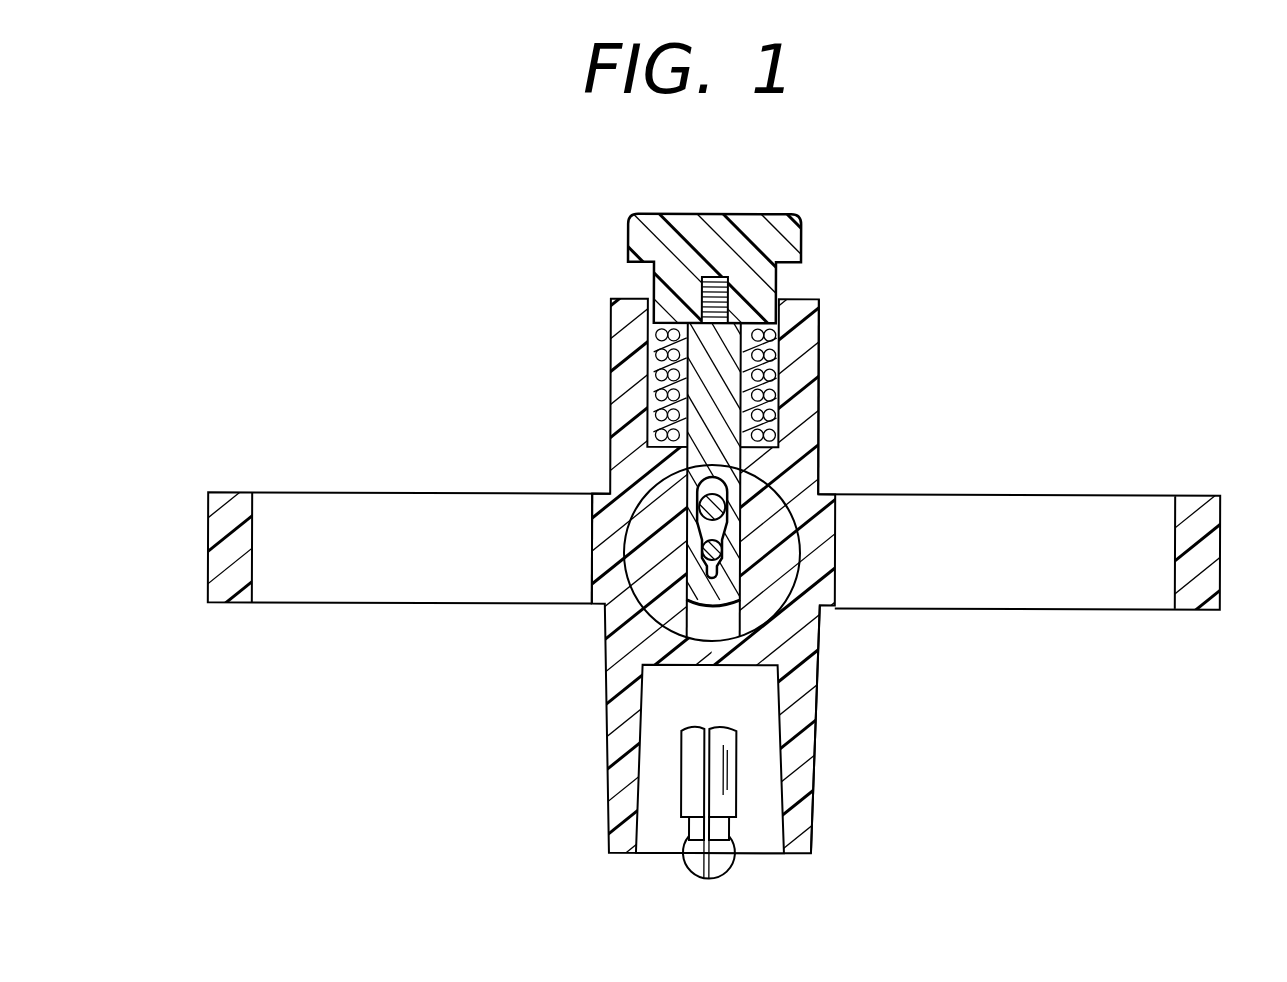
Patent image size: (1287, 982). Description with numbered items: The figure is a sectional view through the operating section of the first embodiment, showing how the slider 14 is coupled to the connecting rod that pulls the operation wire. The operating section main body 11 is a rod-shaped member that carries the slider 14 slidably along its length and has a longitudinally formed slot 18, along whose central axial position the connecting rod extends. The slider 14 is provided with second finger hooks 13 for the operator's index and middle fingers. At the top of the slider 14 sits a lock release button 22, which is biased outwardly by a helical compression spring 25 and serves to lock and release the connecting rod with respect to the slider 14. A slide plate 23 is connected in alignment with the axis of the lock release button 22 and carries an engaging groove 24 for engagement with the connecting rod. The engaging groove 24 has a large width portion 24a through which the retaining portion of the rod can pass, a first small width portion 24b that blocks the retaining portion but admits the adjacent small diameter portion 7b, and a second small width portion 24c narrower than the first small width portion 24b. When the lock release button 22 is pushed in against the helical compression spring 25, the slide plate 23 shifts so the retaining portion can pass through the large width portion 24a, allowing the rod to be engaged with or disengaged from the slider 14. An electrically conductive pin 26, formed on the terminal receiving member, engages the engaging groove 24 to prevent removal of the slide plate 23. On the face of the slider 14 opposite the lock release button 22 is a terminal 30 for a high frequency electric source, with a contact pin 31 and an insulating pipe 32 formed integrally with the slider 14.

The small diameter portion 7b is at (660, 622).
The operating section main body 11 is at (600, 492).
The second finger hooks 13 is at (1197, 517).
The slider 14 is at (600, 548).
The slot 18 is at (795, 630).
The lock release button 22 is at (798, 224).
The slide plate 23 is at (705, 370).
The engaging groove 24 is at (688, 503).
The large width portion 24a is at (735, 500).
The first small width portion 24b is at (723, 550).
The second small width portion 24c is at (745, 602).
The helical compression spring 25 is at (765, 357).
The electrically conductive pin 26 is at (800, 470).
The terminal 30 is at (791, 835).
The contact pin 31 is at (693, 862).
The insulating pipe 32 is at (618, 795).